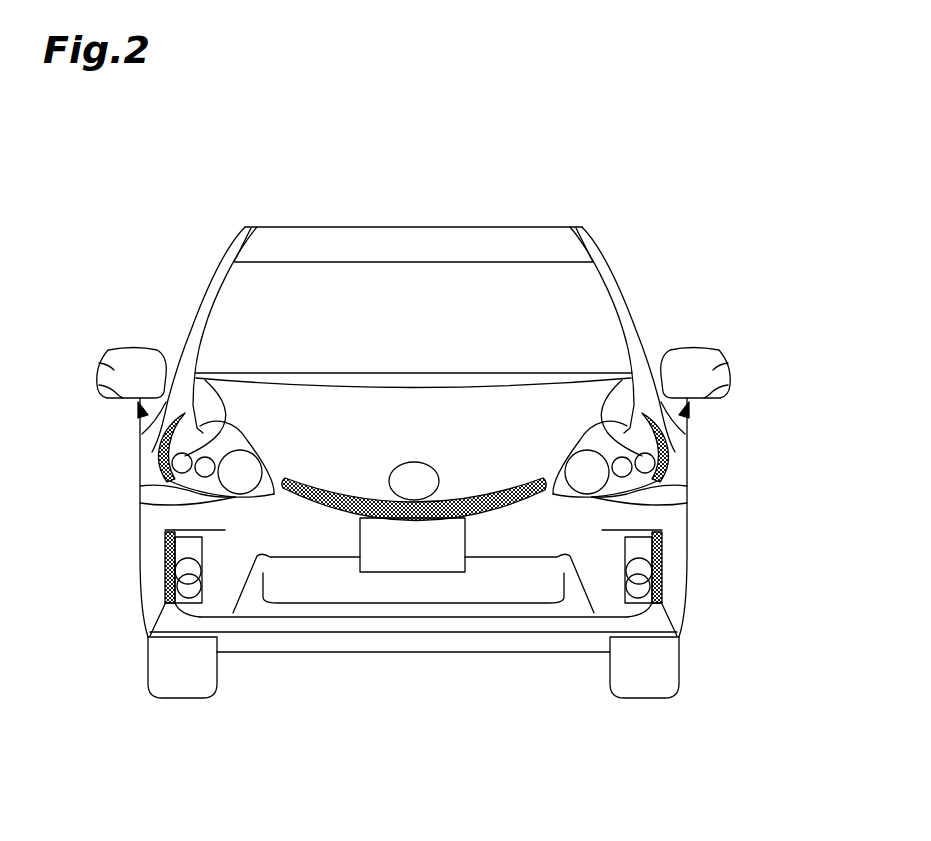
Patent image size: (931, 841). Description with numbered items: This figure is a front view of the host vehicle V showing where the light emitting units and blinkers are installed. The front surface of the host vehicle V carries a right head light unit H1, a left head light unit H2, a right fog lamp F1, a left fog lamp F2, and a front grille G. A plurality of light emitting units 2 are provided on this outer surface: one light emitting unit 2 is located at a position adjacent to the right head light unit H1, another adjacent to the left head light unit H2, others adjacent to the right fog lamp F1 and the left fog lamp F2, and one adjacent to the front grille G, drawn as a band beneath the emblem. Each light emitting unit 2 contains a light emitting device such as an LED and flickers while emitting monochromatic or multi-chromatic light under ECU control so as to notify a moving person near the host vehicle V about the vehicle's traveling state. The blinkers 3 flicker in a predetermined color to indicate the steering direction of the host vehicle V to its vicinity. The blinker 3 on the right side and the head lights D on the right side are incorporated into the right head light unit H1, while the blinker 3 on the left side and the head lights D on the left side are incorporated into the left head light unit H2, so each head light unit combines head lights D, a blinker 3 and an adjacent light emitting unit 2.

The host vehicle V is at (573, 226).
The front grille G is at (338, 478).
The right head light unit H1 is at (239, 428).
The left head light unit H2 is at (588, 428).
The right fog lamp F1 is at (203, 606).
The left fog lamp F2 is at (624, 606).
The light emitting unit 2 is at (160, 465).
The blinker 3 is at (205, 380).
The head lights D is at (140, 486).